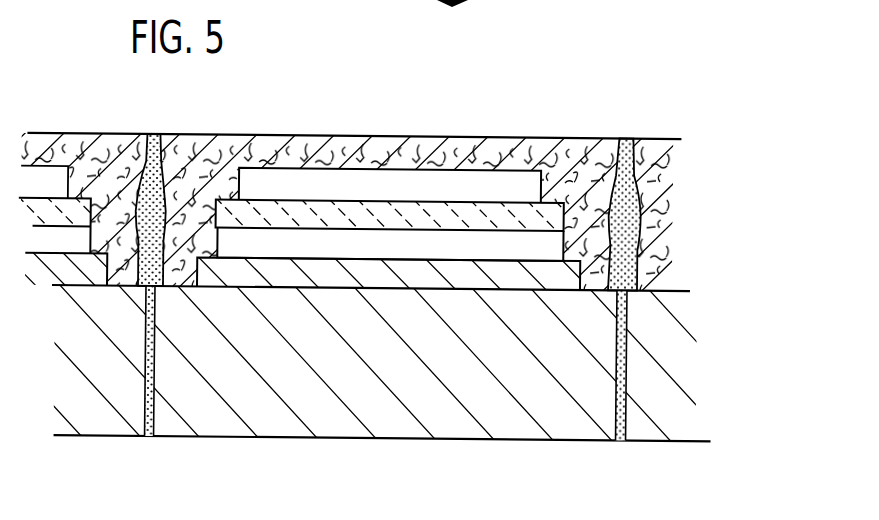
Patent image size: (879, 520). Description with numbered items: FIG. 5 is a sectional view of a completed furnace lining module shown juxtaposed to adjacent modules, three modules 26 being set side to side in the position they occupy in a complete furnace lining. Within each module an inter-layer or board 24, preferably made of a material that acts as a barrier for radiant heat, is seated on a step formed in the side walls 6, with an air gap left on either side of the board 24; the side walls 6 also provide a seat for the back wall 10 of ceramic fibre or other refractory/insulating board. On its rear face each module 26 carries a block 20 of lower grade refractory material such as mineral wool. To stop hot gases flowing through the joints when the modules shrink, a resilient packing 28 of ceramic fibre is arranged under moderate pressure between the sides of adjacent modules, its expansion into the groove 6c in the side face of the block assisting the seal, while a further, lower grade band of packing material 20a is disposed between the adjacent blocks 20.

The module 26 is at (43, 128).
The packing 28 is at (164, 164).
The groove 6c is at (142, 193).
The inter-layer or board 24 is at (435, 209).
The back wall 10 is at (327, 270).
The side walls 6 is at (182, 289).
The block of lower grade refractory material 20 is at (427, 362).
The packing material 20a is at (147, 434).